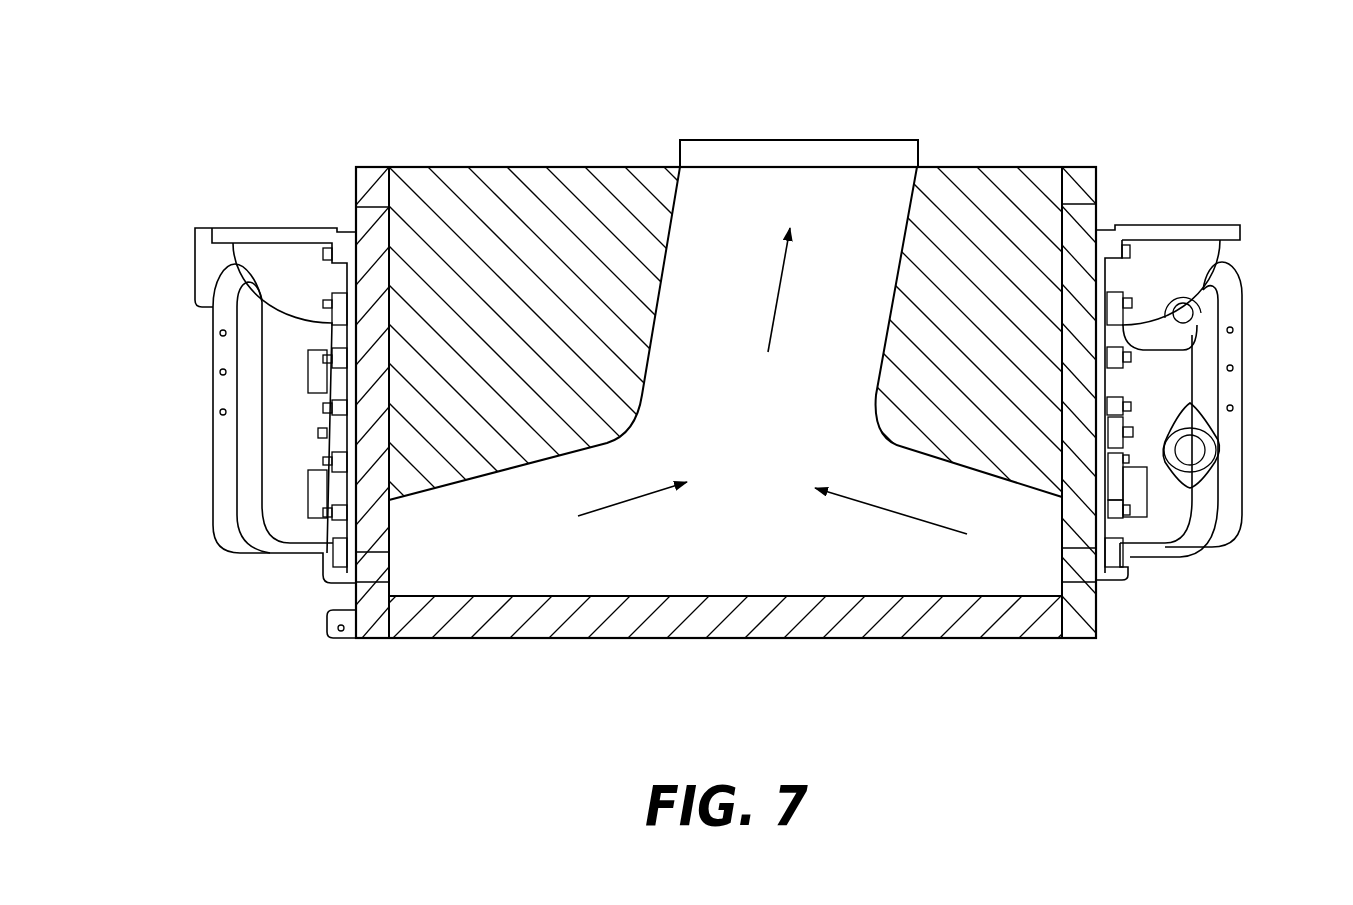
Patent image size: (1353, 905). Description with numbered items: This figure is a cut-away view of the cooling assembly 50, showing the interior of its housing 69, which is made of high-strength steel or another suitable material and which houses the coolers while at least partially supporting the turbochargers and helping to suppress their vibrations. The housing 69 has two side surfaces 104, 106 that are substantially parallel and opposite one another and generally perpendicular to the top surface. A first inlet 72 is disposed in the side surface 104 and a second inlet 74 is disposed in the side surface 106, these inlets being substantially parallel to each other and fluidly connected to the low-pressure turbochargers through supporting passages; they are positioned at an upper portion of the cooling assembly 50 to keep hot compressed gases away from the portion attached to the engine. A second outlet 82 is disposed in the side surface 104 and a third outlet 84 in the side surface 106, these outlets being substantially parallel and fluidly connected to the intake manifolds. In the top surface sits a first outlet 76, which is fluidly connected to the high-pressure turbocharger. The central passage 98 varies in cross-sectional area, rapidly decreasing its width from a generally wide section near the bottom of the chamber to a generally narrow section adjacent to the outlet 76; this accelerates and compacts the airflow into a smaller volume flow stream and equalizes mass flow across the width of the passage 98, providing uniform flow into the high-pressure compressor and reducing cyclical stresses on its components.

The cooling assembly 50 is at (508, 142).
The housing 69 is at (686, 639).
The first inlet 72 is at (178, 271).
The second inlet 74 is at (1248, 250).
The first outlet 76 is at (911, 121).
The second outlet 82 is at (198, 460).
The third outlet 84 is at (1263, 488).
The passage 98 is at (735, 563).
The side surface 104 is at (356, 587).
The side surface 106 is at (1097, 608).